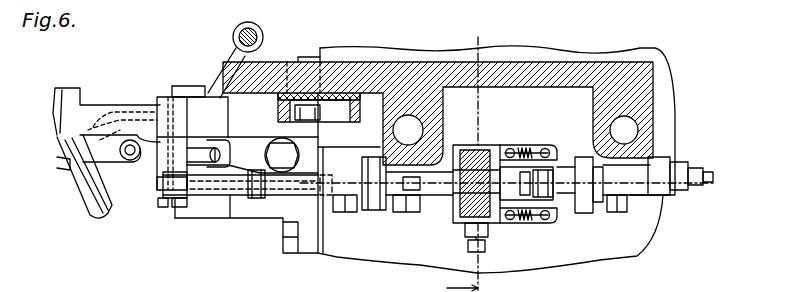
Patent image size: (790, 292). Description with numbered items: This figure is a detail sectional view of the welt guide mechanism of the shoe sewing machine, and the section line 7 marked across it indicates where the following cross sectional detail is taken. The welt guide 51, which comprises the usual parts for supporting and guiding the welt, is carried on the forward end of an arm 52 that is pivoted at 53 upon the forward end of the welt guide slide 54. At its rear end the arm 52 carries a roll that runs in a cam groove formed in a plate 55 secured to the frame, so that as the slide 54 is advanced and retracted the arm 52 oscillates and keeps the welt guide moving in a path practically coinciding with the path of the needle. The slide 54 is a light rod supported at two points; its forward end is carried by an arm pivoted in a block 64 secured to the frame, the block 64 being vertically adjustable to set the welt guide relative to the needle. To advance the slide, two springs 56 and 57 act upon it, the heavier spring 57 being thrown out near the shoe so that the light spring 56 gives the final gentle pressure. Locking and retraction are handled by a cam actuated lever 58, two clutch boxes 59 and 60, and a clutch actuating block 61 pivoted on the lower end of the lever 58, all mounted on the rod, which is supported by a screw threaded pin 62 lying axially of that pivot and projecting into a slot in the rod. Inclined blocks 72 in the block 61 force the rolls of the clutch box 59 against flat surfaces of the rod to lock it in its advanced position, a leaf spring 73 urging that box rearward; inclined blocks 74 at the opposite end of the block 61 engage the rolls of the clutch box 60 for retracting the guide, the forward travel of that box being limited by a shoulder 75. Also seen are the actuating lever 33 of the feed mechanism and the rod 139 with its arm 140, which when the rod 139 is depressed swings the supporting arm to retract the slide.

The section line 7- 7 is at (467, 153).
The actuating lever 33 is at (297, 6).
The welt guide 51 is at (100, 107).
The arm 52 is at (243, 135).
The pivot 53 is at (173, 207).
The welt guide slide 54 is at (225, 187).
The plate 55 is at (333, 110).
The spring 56 is at (275, 181).
The spring 57 is at (617, 182).
The cam actuated lever 58 is at (496, 148).
The clutch box 59 is at (372, 184).
The clutch box 60 is at (580, 203).
The clutch actuating block 61 is at (554, 172).
The screw threaded pin 62 is at (483, 238).
The block 64 is at (201, 151).
The inclined blocks 72 is at (410, 212).
The leaf spring 73 is at (378, 211).
The inclined blocks 74 is at (531, 205).
The shoulder 75 is at (604, 206).
The rod 139 is at (262, 42).
The arm 140 is at (233, 53).